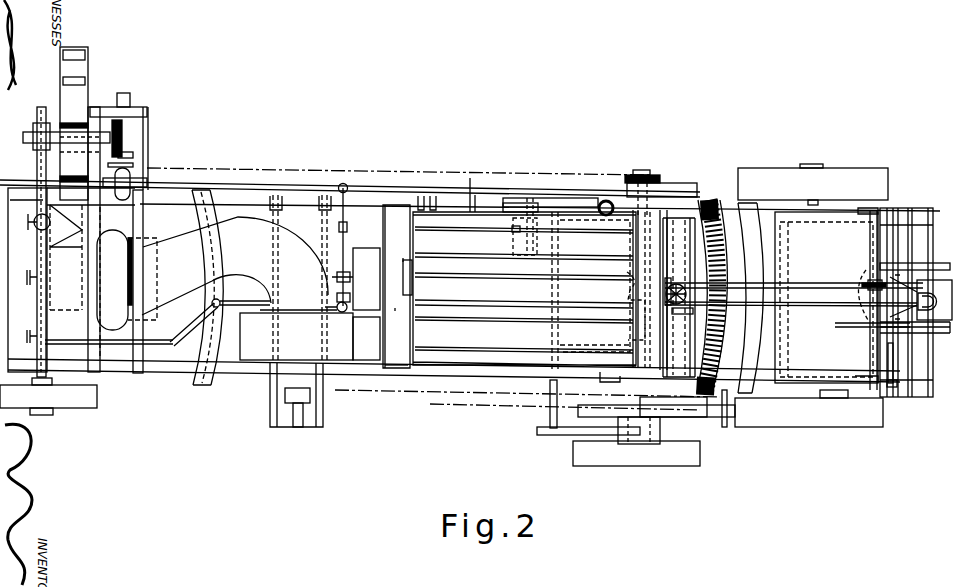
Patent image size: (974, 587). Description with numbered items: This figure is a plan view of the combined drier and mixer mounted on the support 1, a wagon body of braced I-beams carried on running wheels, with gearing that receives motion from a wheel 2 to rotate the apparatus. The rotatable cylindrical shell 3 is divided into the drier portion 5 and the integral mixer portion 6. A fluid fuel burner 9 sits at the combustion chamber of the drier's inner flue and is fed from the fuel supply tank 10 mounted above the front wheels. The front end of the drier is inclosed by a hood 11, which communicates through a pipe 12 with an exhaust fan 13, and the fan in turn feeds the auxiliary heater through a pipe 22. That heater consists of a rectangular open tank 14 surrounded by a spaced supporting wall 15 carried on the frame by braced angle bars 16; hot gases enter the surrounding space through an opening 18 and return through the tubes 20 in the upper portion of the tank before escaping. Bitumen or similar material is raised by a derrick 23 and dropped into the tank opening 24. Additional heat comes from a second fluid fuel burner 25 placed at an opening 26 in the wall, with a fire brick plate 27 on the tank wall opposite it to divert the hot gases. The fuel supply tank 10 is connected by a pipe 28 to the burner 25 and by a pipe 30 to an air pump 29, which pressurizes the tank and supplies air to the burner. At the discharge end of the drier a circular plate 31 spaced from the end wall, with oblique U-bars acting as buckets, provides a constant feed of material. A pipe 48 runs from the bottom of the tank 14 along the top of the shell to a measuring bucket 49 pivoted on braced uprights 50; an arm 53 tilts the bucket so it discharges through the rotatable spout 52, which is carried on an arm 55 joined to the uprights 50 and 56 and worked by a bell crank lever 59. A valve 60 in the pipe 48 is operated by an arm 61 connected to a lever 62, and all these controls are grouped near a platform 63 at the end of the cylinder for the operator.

The support 1 is at (244, 374).
The wheel 2 is at (573, 456).
The cylindrical shell 3 is at (695, 297).
The drier portion 5 is at (253, 287).
The mixer portion 6 is at (755, 298).
The fluid fuel burner 9 is at (66, 242).
The fuel supply tank 10 is at (86, 301).
The hood 11 is at (108, 210).
The pipe 12 is at (235, 266).
The exhaust fan 13 is at (296, 335).
The tank 14 is at (414, 266).
The supporting wall 15 is at (527, 287).
The braced angle bars 16 is at (426, 198).
The opening 18 is at (396, 357).
The tubes 20 is at (560, 292).
The pipe 22 is at (366, 338).
The derrick 23 is at (556, 198).
The tank opening 24 is at (474, 193).
The fluid fuel burner 25 is at (366, 279).
The opening 26 is at (395, 301).
The fire brick plate 27 is at (397, 256).
The pipe 28 is at (220, 315).
The air pump 29 is at (518, 240).
The pipe 30 is at (398, 177).
The circular plate 31 is at (344, 248).
The pipe 48 is at (791, 314).
The measuring bucket 49 is at (946, 311).
The uprights 50 is at (915, 302).
The spout 52 is at (857, 289).
The arm 53 is at (860, 329).
The arm 55 is at (893, 363).
The upright angle bar 56 is at (860, 295).
The bell crank lever 59 is at (842, 397).
The valve 60 is at (679, 310).
The arm 61 is at (794, 278).
The lever 62 is at (866, 281).
The platform 63 is at (777, 243).